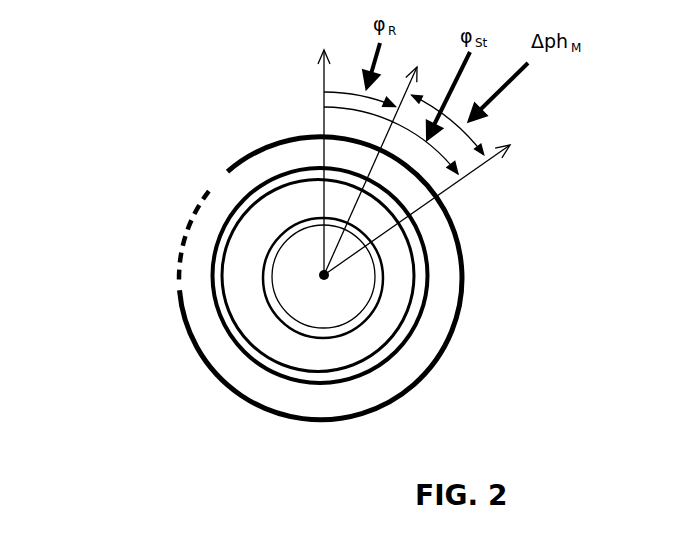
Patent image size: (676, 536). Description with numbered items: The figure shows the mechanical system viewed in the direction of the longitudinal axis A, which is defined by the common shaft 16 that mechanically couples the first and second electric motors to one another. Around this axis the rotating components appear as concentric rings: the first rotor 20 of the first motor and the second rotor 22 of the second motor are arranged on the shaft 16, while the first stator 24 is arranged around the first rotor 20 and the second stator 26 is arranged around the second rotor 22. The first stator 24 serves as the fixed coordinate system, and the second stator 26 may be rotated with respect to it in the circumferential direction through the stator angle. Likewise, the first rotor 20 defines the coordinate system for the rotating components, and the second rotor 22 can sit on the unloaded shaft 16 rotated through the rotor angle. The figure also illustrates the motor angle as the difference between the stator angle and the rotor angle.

The common shaft 16 is at (288, 270).
The first rotor 20 is at (250, 235).
The second rotor 22 is at (242, 272).
The first stator 24 is at (235, 180).
The second stator 26 is at (222, 197).
The longitudinal axis A is at (324, 275).